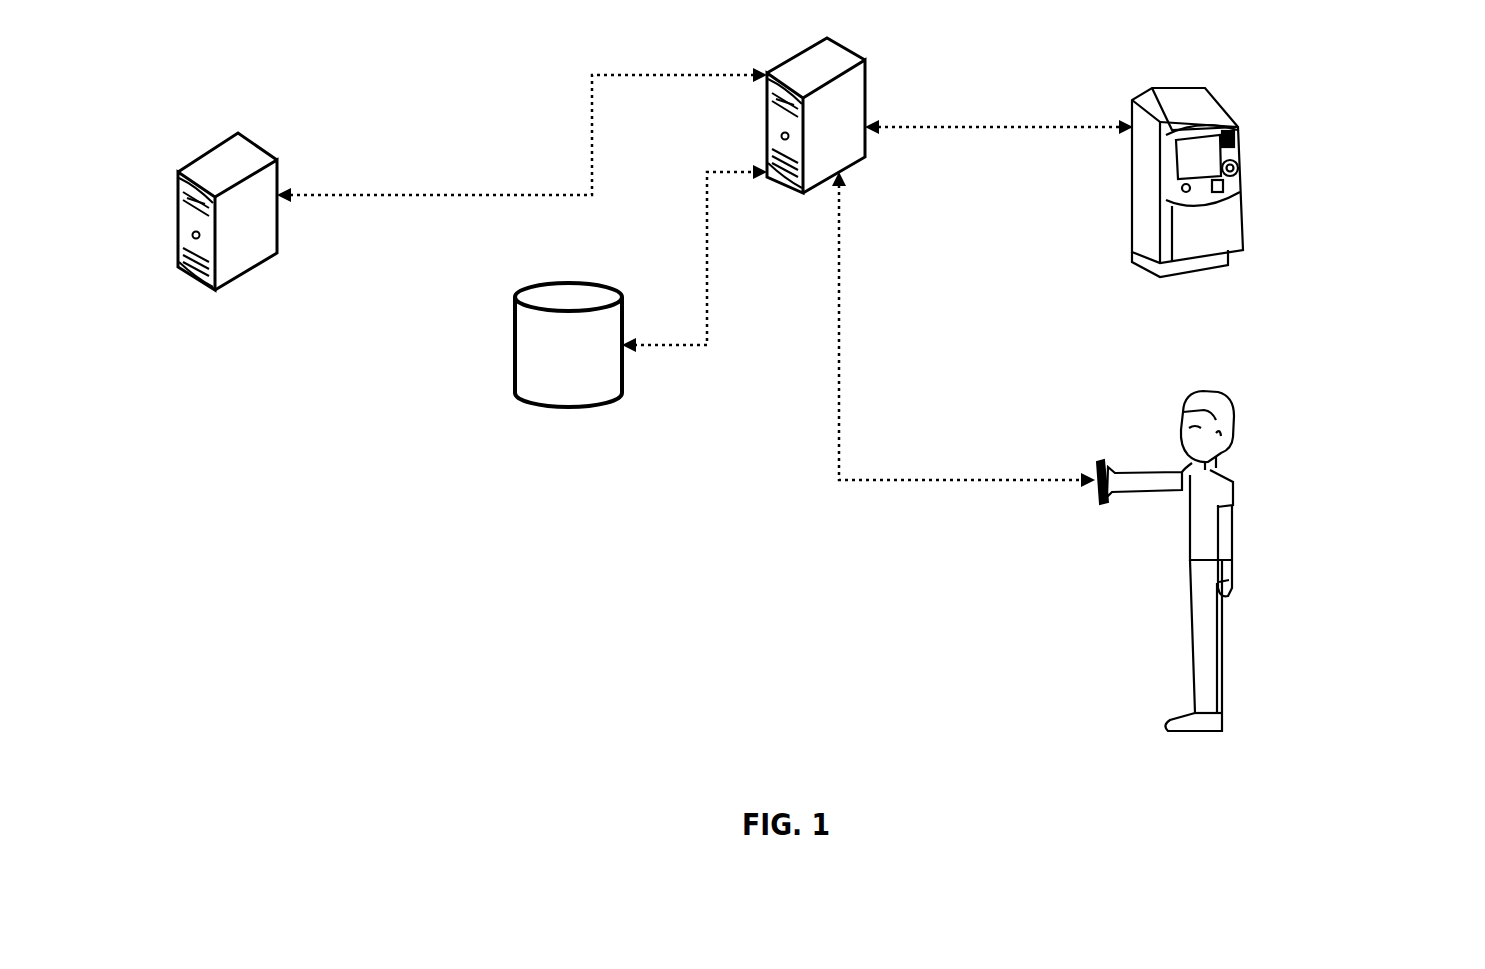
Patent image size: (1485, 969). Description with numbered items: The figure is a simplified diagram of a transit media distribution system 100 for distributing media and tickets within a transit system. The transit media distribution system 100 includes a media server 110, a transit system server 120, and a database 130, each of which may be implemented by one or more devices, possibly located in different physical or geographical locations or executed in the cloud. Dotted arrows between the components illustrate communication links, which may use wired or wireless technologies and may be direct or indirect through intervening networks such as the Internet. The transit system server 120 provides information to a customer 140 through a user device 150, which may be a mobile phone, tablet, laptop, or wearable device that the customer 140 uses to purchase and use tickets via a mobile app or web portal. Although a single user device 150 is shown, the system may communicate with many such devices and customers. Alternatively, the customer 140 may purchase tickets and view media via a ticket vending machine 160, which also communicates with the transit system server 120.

The transit media distribution system 100 is at (312, 647).
The media server 110 is at (258, 158).
The transit system server 120 is at (848, 57).
The database 130 is at (548, 298).
The customer 140 is at (1212, 393).
The user device 150 is at (1105, 458).
The ticket vending machine 160 is at (1198, 93).